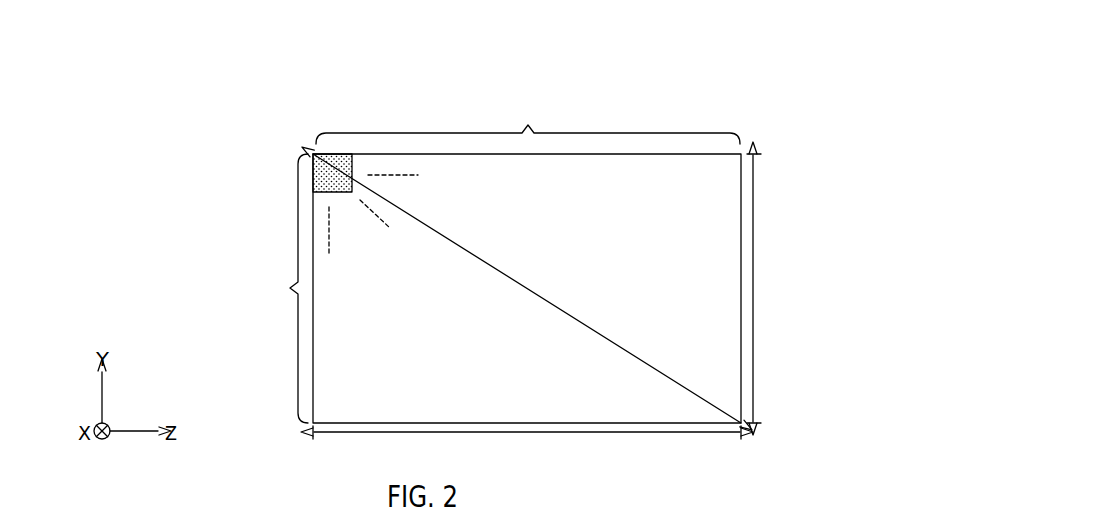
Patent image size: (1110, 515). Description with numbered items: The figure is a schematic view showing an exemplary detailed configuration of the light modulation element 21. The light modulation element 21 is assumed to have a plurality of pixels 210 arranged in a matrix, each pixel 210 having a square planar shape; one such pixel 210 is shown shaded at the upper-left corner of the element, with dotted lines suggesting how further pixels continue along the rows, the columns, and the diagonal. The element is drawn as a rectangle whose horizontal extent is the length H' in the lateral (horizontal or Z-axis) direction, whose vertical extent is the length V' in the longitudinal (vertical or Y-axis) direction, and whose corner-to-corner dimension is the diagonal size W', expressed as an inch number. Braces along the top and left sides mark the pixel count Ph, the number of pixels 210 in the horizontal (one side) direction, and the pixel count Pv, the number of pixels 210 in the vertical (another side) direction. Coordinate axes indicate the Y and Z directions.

The light modulation element 21 is at (713, 65).
The pixels 210 is at (336, 158).
The pixel count in a horizontal direction Ph is at (572, 120).
The pixel count in a vertical direction Pv is at (163, 288).
The diagonal size W' is at (527, 288).
The length in a longitudinal direction V' is at (762, 288).
The length in a lateral direction H' is at (527, 446).